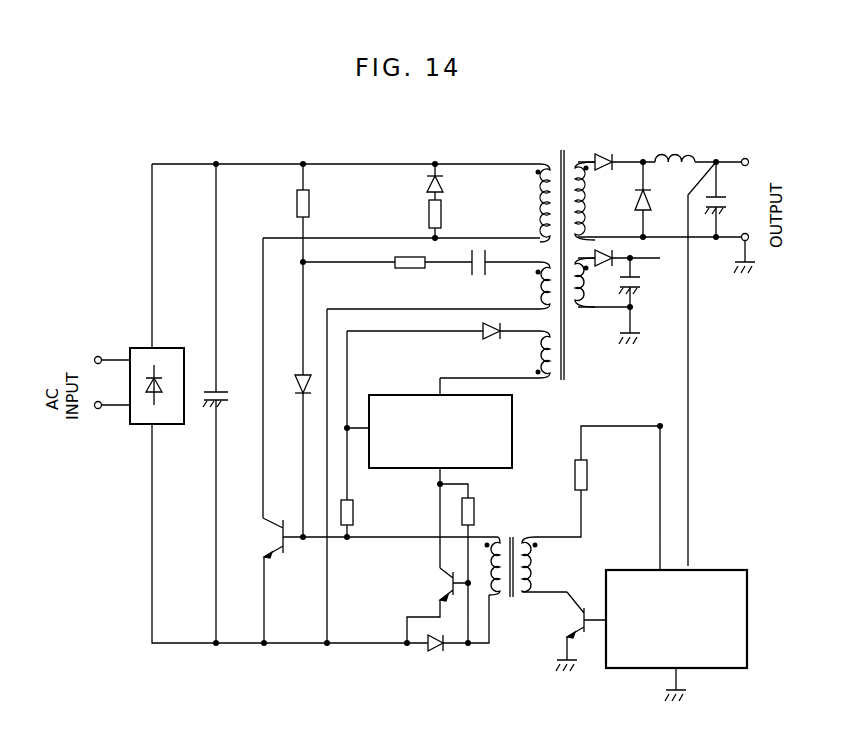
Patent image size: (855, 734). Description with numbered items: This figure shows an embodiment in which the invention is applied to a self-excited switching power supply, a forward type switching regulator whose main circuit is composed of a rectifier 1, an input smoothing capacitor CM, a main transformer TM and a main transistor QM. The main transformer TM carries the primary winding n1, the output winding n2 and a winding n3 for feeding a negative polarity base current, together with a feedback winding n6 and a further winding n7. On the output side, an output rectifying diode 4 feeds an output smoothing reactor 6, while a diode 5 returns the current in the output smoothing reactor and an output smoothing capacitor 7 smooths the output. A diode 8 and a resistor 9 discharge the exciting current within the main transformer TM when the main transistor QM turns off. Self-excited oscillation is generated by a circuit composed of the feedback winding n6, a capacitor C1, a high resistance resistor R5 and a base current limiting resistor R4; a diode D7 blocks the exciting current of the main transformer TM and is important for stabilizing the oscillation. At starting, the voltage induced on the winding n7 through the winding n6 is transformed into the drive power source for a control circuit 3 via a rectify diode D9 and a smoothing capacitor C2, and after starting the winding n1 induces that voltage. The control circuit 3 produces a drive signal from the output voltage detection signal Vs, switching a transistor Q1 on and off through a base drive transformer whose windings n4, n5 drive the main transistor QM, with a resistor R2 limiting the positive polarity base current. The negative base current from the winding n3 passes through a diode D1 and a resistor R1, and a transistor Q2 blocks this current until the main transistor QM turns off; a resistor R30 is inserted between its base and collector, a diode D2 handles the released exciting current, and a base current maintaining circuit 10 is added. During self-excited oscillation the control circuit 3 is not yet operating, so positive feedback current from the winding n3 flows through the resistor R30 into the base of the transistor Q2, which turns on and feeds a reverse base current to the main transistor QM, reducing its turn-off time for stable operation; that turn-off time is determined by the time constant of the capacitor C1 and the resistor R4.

The rectifier 1 is at (142, 350).
The control circuit 3 is at (747, 608).
The output rectifying diode 4 is at (602, 153).
The diode for returning the current in an output smoothing reactor 5 is at (652, 208).
The choke coil 6 is at (677, 155).
The output smoothing capacitor 7 is at (730, 203).
The diode 8 is at (426, 186).
The resistor 9 is at (426, 216).
The negative polarity base current maintaining circuit 10 is at (512, 425).
The input smoothing capacitor CM is at (246, 384).
The high resistance resistor R5 is at (296, 207).
The base current limiting resistor R4 is at (410, 268).
The resistor for limiting the negative polarity base current R1 is at (353, 510).
The resistor for limiting the base current of positive polarity R2 is at (587, 473).
The resistor R30 is at (474, 510).
The capacitor C1 is at (478, 280).
The smoothing capacitor C2 is at (643, 284).
The diode for blocking the exciting current of the main transformer D1 is at (486, 340).
The diode D2 is at (432, 648).
The diode for blocking the exciting current of the main transformer D7 is at (300, 378).
The rectify diode D9 is at (606, 246).
The main transistor QM is at (276, 540).
The transistor Q1 is at (572, 624).
The transistor Q2 is at (446, 590).
The main transformer TM is at (565, 150).
The primary winding n1 is at (526, 205).
The output winding n2 is at (584, 210).
The winding for feeding a negative polarity base current n3 is at (528, 358).
The winding of drive transformer n4 is at (540, 563).
The winding n5 is at (486, 598).
The feedback winding n6 is at (528, 290).
The winding n7 is at (586, 292).
The output voltage detection signal Vs is at (699, 557).